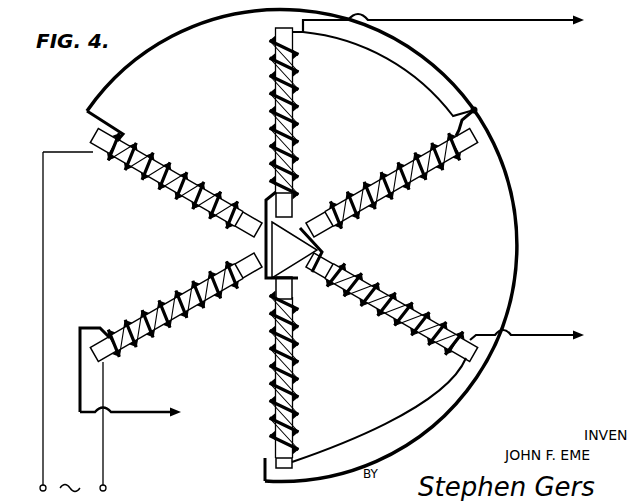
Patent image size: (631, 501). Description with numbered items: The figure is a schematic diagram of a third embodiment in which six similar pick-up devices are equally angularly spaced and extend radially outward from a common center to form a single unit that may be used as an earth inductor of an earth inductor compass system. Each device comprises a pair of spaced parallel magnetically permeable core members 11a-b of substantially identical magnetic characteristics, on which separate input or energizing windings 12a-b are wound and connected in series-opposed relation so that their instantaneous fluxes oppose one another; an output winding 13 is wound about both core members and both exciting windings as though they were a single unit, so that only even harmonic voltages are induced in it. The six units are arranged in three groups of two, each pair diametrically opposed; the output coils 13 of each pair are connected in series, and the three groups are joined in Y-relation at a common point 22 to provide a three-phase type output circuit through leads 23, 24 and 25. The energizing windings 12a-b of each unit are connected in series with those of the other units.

The core members 11a-b is at (474, 158).
The input or energizing windings 12a-b is at (276, 126).
The output winding 13 is at (276, 92).
The common point 22 is at (477, 110).
The output lead 23 is at (146, 416).
The output lead 24 is at (505, 21).
The output lead 25 is at (537, 337).